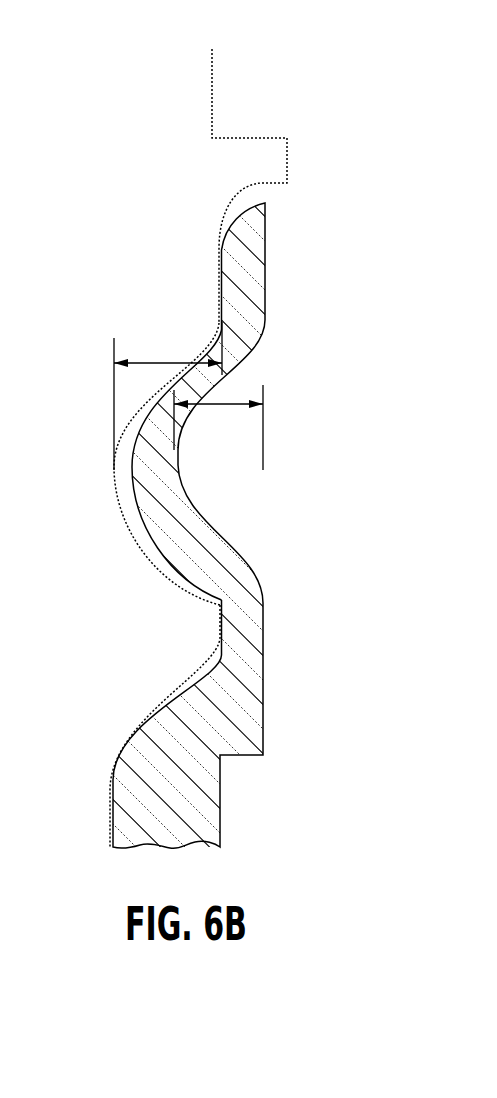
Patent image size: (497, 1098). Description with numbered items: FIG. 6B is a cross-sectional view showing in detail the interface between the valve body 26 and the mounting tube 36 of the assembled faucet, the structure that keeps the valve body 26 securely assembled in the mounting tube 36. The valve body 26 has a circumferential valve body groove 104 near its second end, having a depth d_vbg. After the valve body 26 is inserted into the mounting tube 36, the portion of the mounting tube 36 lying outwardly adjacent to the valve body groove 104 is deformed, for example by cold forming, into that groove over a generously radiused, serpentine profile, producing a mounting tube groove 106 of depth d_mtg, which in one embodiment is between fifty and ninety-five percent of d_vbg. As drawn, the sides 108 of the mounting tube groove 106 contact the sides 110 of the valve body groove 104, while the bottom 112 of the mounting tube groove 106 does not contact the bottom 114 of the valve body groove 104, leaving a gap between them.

The valve body 26 is at (223, 127).
The mounting tube 36 is at (235, 774).
The valve body groove 104 is at (100, 457).
The mounting tube groove 106 is at (282, 442).
The sides of the mounting tube groove 108 is at (156, 540).
The sides of the valve body groove 110 is at (155, 543).
The bottom of the mounting tube groove 112 is at (133, 468).
The bottom of the valve body groove 114 is at (113, 470).